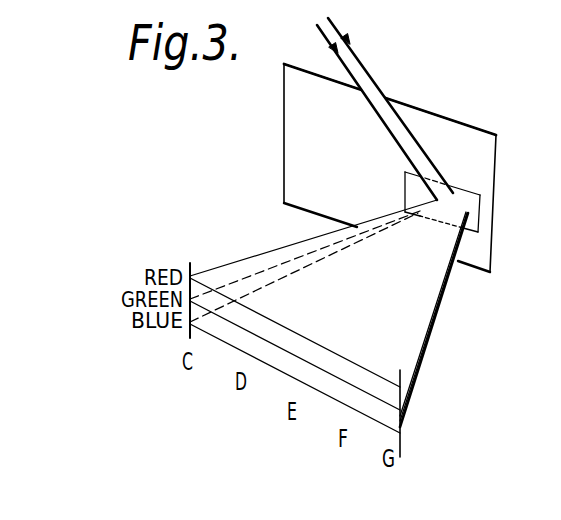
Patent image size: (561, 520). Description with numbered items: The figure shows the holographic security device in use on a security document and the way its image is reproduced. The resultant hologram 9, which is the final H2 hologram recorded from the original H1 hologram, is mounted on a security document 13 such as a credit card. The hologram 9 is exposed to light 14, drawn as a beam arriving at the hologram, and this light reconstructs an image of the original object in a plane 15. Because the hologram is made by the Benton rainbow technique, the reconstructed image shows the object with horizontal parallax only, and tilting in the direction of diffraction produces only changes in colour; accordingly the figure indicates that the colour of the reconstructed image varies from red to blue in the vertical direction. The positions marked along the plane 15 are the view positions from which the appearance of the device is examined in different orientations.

The hologram 9 is at (473, 217).
The security document 13 is at (483, 153).
The light 14 is at (370, 70).
The plane 15 is at (402, 425).